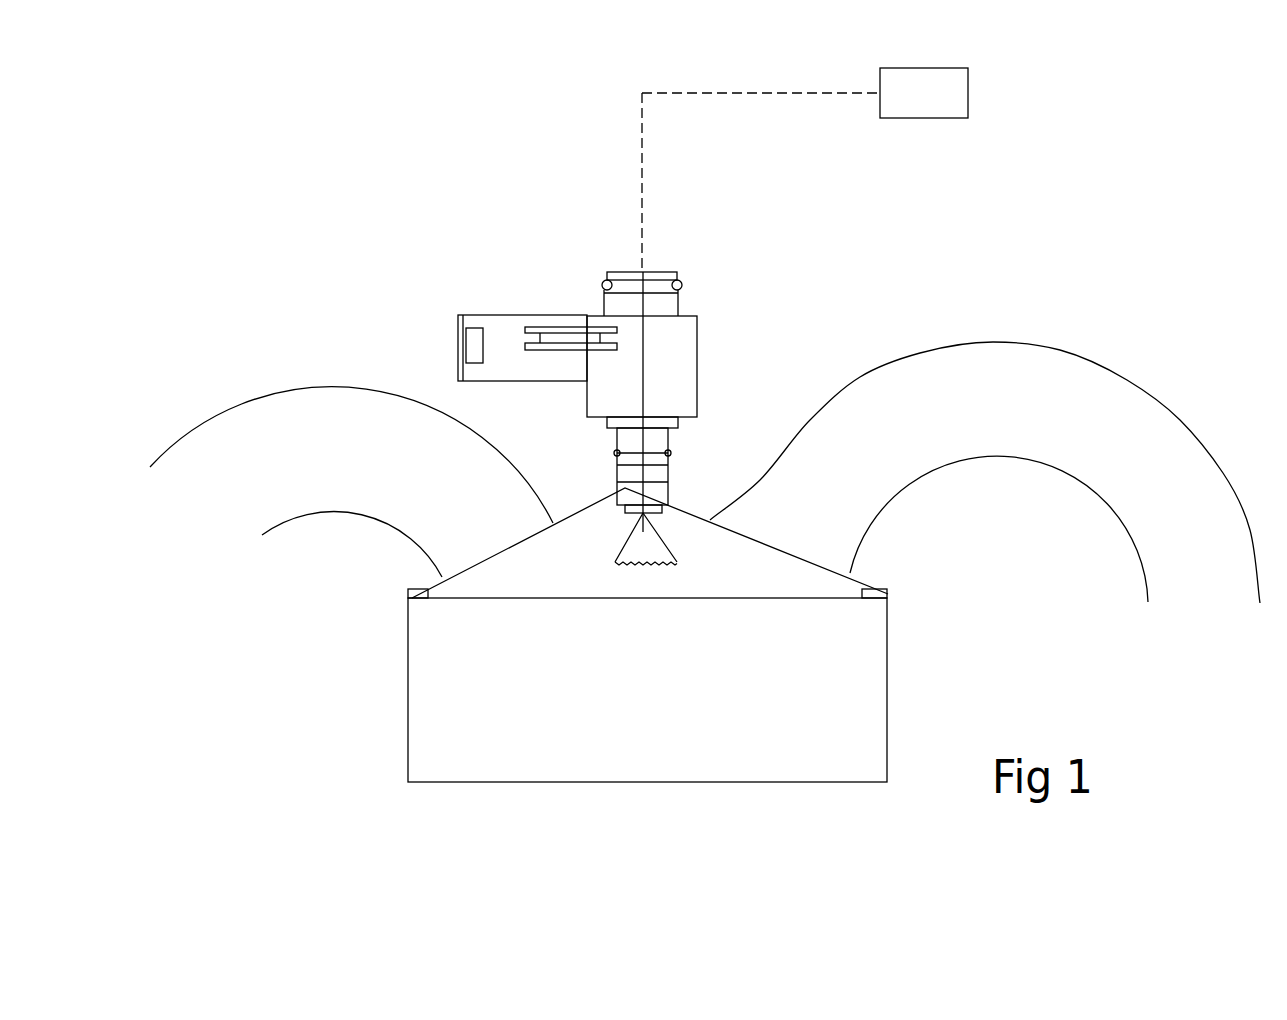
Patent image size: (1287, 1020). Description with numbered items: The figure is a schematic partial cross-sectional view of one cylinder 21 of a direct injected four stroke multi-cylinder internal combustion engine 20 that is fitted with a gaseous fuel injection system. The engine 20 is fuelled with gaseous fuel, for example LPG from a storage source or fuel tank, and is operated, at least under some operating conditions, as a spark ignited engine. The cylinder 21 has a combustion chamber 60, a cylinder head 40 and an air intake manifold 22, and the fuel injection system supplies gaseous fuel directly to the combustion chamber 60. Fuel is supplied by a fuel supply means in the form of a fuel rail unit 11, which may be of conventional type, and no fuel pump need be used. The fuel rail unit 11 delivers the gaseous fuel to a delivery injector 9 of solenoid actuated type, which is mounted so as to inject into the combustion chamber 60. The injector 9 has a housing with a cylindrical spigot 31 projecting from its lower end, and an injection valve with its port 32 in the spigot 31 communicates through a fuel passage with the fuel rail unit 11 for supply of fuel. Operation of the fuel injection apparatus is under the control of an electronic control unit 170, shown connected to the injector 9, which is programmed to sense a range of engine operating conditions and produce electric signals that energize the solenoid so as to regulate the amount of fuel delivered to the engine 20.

The electronic control unit 170 is at (805, 169).
The fuel rail unit 11 is at (702, 268).
The cylindrical spigot 31 is at (668, 488).
The valve port 32 is at (627, 520).
The delivery injector 9 is at (590, 447).
The combustion chamber 60 is at (680, 678).
The cylinder 21 is at (888, 703).
The air intake manifold 22 is at (322, 474).
The internal combustion engine 20 is at (988, 285).
The cylinder head 40 is at (740, 520).